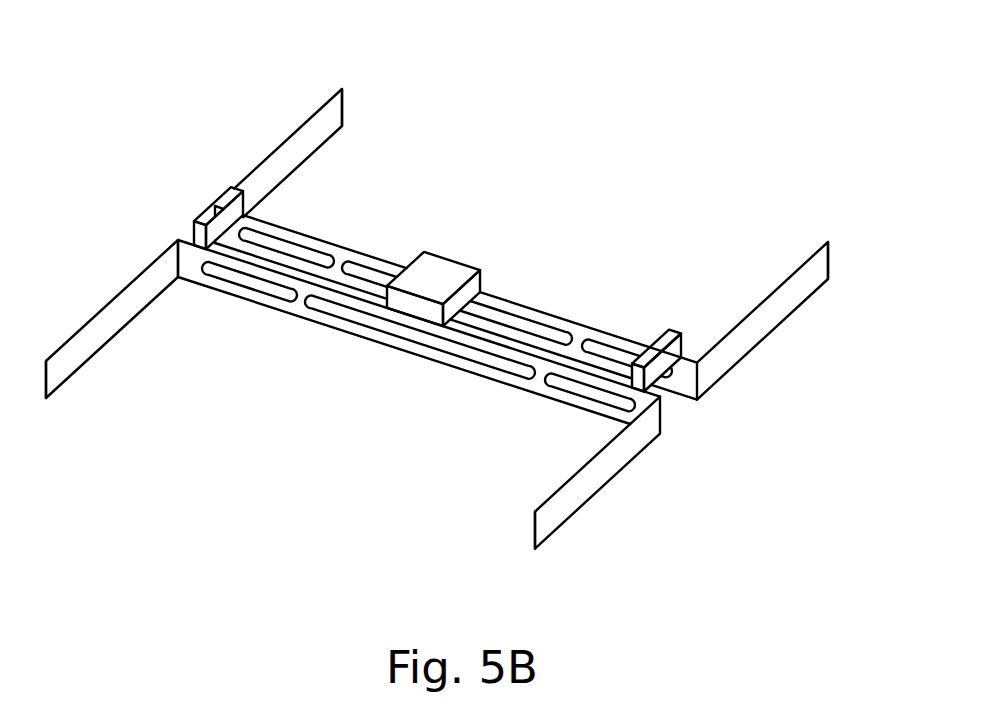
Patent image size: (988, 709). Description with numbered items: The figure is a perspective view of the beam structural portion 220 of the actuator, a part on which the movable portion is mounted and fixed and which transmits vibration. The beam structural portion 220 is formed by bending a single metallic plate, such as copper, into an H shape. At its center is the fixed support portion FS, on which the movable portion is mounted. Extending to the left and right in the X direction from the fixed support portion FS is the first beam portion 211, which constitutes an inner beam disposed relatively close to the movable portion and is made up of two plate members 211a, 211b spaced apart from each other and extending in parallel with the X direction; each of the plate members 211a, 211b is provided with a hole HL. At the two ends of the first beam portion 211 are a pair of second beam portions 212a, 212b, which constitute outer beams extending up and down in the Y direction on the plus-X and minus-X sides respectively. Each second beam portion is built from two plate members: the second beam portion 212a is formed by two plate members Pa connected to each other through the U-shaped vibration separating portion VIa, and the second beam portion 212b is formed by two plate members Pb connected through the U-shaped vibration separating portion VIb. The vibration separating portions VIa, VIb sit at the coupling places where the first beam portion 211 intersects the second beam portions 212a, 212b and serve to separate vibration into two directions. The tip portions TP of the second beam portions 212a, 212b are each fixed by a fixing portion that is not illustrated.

The beam structural portion 220 is at (672, 252).
The first beam portion 211 is at (553, 293).
The plate member 211a is at (570, 322).
The plate member 211b is at (527, 392).
The hole HL is at (272, 228).
The fixed support portion FS is at (441, 268).
The vibration separating portion VIa is at (660, 347).
The vibration separating portion VIb is at (226, 190).
The second beam portion 212a is at (740, 328).
The second beam portion 212b is at (338, 85).
The plate member Pa is at (752, 345).
The plate member Pb is at (293, 147).
The tip portion TP is at (346, 97).